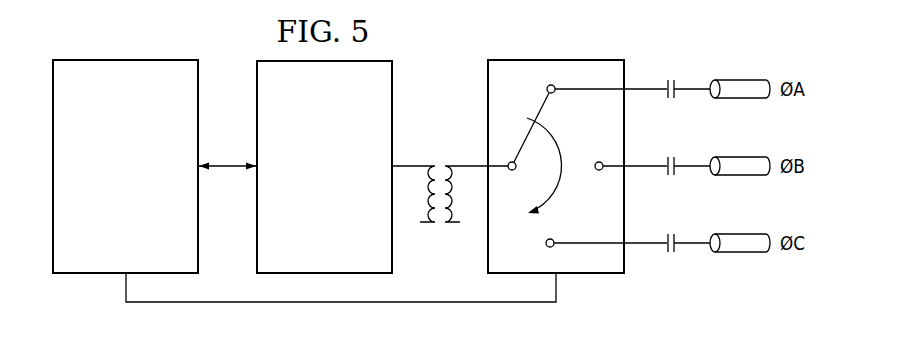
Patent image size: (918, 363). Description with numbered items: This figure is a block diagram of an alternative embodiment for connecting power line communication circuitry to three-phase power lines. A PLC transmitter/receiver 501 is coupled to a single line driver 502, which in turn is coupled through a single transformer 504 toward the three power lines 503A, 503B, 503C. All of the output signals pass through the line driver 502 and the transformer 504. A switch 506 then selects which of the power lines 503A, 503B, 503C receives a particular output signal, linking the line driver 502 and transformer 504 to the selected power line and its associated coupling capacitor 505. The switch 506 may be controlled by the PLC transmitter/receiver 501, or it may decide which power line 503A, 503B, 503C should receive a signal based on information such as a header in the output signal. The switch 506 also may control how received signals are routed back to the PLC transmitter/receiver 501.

The PLC transmitter/receiver 501 is at (107, 220).
The line driver 502 is at (306, 198).
The power line 503A is at (742, 80).
The power line 503B is at (742, 157).
The power line 503C is at (742, 253).
The transformer 504 is at (442, 161).
The coupling capacitor 505 is at (671, 76).
The switch 506 is at (569, 54).